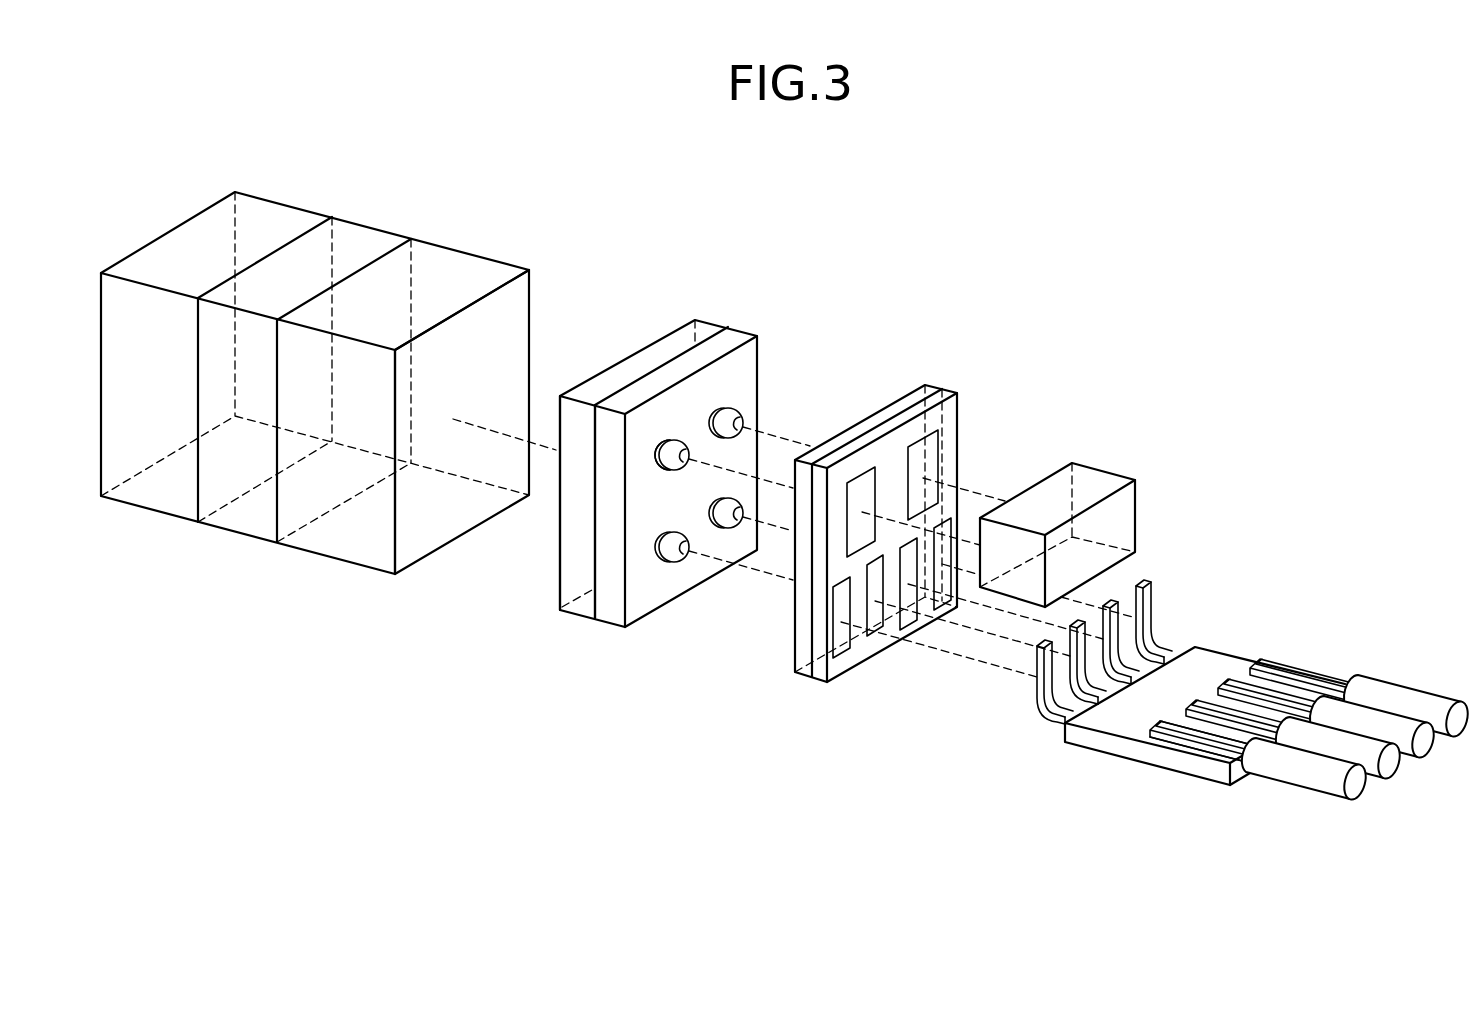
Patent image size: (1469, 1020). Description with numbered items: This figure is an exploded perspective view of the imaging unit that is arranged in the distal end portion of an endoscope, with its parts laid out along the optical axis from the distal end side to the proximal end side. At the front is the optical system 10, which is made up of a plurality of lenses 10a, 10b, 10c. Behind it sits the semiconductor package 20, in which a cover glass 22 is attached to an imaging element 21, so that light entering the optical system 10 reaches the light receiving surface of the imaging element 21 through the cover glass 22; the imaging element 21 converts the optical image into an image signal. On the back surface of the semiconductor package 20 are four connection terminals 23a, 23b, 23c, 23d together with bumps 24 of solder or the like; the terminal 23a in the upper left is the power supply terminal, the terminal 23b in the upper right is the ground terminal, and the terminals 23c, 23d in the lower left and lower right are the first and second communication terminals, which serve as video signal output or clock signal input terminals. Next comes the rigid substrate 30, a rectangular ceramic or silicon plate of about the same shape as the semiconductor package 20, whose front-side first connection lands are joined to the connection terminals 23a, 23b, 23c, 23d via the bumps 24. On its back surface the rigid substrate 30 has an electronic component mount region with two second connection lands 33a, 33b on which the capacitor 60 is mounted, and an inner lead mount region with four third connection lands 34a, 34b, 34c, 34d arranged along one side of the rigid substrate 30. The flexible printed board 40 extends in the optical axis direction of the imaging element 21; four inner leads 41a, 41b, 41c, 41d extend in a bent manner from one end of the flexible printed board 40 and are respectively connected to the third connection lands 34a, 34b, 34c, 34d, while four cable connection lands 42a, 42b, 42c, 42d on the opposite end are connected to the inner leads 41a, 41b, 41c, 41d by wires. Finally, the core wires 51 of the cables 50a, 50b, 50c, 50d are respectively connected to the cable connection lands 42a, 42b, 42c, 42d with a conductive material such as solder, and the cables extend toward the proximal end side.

The optical system 10 is at (315, 360).
The lens 10a is at (268, 216).
The lens 10b is at (356, 241).
The lens 10c is at (453, 272).
The semiconductor package 20 is at (624, 479).
The imaging element 21 is at (607, 617).
The cover glass 22 is at (568, 582).
The connection terminal 23a is at (657, 440).
The connection terminal 23b is at (716, 408).
The connection terminal 23c is at (658, 562).
The connection terminal 23d is at (716, 528).
The bump 24 is at (678, 438).
The rigid substrate 30 is at (851, 544).
The second connection land 33a is at (862, 487).
The second connection land 33b is at (917, 458).
The third connection land 34a is at (837, 650).
The third connection land 34b is at (940, 590).
The third connection land 34c is at (872, 630).
The third connection land 34d is at (910, 607).
The flexible printed board 40 is at (1164, 695).
The inner lead 41a is at (1038, 716).
The inner lead 41b is at (1155, 622).
The inner lead 41c is at (1073, 615).
The inner lead 41d is at (1112, 600).
The cable connection land 42a is at (1173, 740).
The cable connection land 42b is at (1305, 688).
The cable connection land 42c is at (1157, 712).
The cable connection land 42d is at (1228, 695).
The cable 50a is at (1318, 778).
The cable 50b is at (1425, 702).
The cable 50c is at (1373, 775).
The cable 50d is at (1405, 757).
The core wire 51 is at (1210, 742).
The capacitor 60 is at (1090, 477).